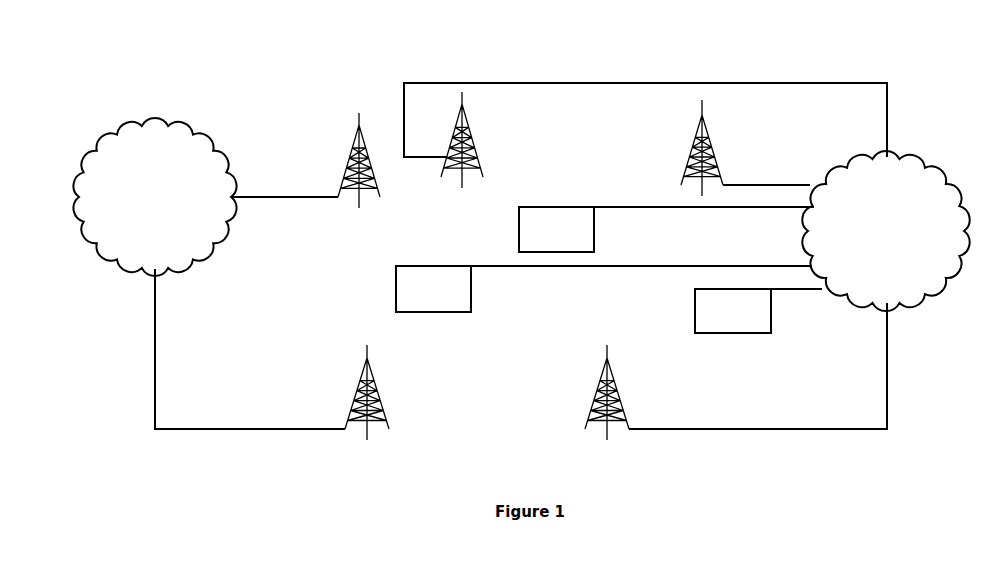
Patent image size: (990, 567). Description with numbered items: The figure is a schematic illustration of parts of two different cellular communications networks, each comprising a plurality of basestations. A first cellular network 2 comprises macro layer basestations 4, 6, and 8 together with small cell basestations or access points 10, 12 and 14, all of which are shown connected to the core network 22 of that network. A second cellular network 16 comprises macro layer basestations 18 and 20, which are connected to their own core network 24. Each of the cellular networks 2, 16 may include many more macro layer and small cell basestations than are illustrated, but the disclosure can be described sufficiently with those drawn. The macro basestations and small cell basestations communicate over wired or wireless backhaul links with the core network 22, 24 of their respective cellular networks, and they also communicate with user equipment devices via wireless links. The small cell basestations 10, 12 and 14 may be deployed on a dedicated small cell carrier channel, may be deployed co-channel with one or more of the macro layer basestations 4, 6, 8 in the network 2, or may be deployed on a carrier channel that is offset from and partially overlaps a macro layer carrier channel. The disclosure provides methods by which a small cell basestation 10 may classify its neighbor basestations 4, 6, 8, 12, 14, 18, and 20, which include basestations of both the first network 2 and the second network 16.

The first cellular network 2 is at (793, 49).
The macro layer basestation 4 is at (479, 162).
The macro layer basestation 6 is at (718, 163).
The macro layer basestation 8 is at (592, 397).
The small cell basestation 10 is at (396, 283).
The small cell basestation 12 is at (519, 226).
The small cell basestation 14 is at (695, 306).
The second cellular network 16 is at (304, 89).
The macro layer basestation 18 is at (357, 209).
The macro layer basestation 20 is at (353, 402).
The core network 22 is at (918, 161).
The core network 24 is at (216, 143).